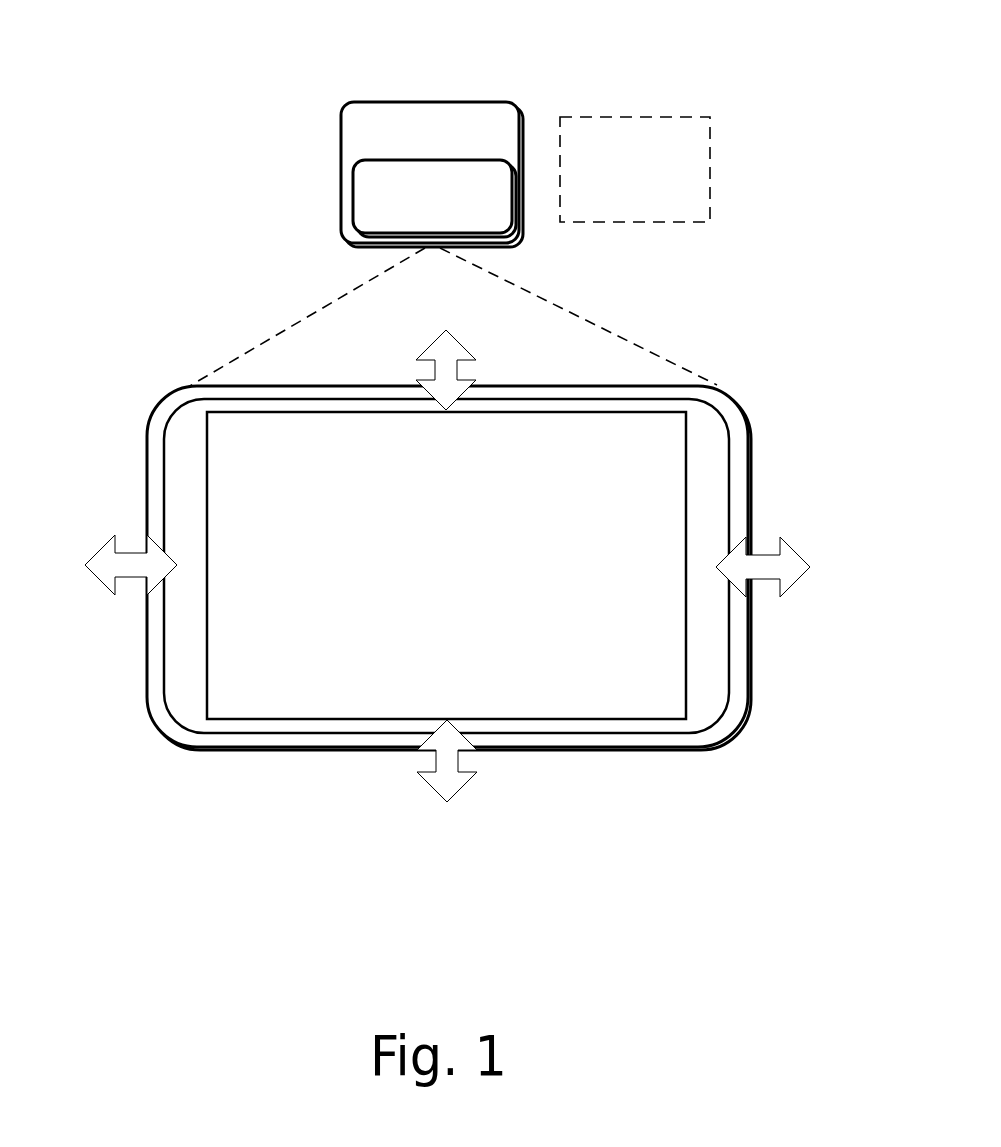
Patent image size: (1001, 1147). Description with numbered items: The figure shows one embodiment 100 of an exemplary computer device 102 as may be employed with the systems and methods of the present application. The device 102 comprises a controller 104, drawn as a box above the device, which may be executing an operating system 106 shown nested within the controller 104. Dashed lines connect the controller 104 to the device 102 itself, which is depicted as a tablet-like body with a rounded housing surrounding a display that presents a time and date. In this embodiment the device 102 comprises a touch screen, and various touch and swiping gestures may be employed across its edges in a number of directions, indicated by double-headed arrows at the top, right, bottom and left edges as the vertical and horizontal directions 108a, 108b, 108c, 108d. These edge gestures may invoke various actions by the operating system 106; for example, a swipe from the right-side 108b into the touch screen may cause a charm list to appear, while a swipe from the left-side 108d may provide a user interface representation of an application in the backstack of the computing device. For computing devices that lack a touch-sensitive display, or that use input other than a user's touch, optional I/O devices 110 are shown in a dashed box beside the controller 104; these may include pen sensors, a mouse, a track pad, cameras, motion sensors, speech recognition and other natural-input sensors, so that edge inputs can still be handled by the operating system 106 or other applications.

The embodiment 100 is at (231, 68).
The device 102 is at (732, 399).
The controller 104 is at (417, 155).
The operating system 106 is at (483, 216).
The vertical direction 108a is at (446, 356).
The right-side 108b is at (787, 567).
The vertical direction 108c is at (447, 775).
The left-side 108d is at (106, 565).
The optional I/O devices 110 is at (617, 201).